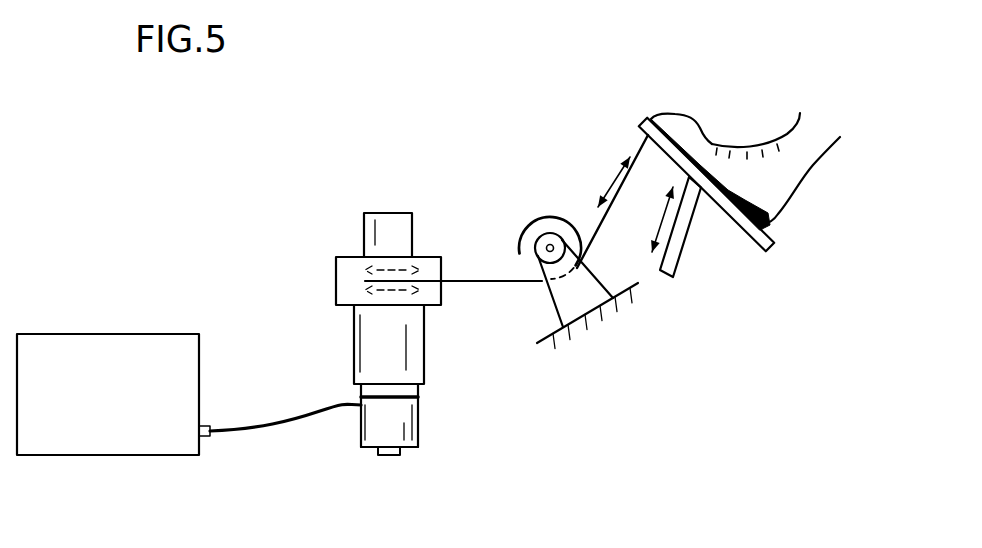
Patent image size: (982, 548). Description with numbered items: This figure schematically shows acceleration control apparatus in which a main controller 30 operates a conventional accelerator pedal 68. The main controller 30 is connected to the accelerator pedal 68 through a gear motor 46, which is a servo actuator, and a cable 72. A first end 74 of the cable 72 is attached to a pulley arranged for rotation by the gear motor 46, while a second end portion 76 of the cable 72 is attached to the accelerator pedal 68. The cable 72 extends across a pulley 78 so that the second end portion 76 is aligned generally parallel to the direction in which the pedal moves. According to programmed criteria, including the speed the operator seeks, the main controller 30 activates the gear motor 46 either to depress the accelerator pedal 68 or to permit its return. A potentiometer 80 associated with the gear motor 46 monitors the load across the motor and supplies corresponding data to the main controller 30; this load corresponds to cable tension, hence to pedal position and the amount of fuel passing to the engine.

The main controller 30 is at (97, 334).
The gear motor 46 is at (440, 340).
The potentiometer 80 is at (367, 225).
The first end 74 is at (436, 252).
The cable 72 is at (477, 283).
The pulley 78 is at (561, 216).
The second end portion 76 is at (634, 200).
The accelerator pedal 68 is at (768, 250).